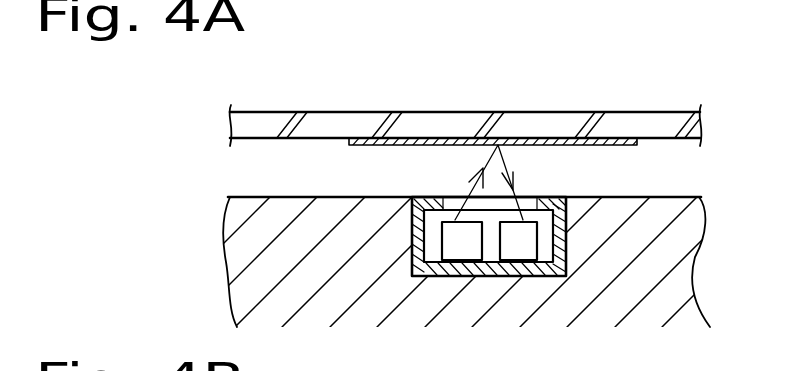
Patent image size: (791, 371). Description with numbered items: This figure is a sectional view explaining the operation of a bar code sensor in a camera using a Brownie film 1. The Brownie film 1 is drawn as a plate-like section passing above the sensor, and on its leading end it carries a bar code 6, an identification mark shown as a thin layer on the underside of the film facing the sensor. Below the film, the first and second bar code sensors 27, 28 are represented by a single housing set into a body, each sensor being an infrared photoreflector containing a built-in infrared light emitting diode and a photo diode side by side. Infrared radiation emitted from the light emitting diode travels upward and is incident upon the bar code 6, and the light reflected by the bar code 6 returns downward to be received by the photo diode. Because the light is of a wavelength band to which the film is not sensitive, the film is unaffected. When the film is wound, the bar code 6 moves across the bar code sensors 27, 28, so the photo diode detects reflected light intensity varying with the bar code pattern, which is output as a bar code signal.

The Brownie film 1 is at (514, 107).
The bar code 6 is at (573, 139).
The first bar code sensor 27 is at (528, 284).
The second bar code sensor 28 is at (475, 284).